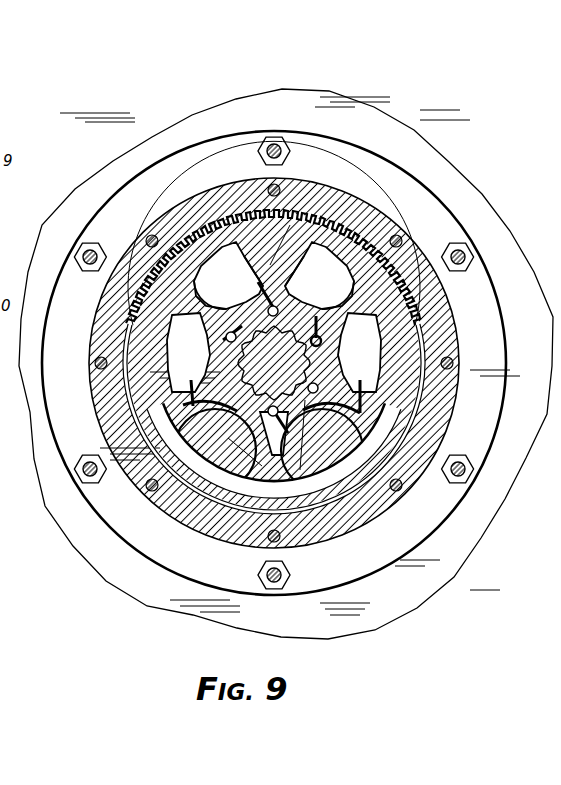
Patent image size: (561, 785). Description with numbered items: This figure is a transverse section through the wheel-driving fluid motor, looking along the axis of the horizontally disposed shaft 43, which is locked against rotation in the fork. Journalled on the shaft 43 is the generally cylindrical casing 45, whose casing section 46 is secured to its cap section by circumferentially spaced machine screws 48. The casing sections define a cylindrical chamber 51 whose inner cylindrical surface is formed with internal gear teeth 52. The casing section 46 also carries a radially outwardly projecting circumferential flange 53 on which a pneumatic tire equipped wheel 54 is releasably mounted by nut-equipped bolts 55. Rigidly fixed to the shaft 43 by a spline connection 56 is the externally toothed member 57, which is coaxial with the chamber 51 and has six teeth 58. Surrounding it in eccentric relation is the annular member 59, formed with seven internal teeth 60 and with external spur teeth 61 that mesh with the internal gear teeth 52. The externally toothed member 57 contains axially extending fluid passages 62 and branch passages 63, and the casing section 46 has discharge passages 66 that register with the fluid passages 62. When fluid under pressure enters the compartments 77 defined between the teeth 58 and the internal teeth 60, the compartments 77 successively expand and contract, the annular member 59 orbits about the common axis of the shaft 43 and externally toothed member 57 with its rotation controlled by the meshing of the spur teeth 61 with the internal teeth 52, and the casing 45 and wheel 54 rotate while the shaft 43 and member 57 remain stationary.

The shaft 43 is at (265, 369).
The casing 45 is at (175, 531).
The casing section 46 is at (212, 537).
The machine screws 48 is at (283, 184).
The cylindrical chamber 51 is at (283, 505).
The internal gear teeth 52 is at (131, 309).
The circumferential flange 53 is at (110, 510).
The wheel 54 is at (125, 569).
The nut-equipped bolts 55 is at (284, 140).
The spline connection 56 is at (292, 264).
The externally toothed member 57 is at (241, 313).
The teeth 58 is at (200, 318).
The annular member 59 is at (225, 470).
The internal teeth 60 is at (330, 192).
The external spur teeth 61 is at (140, 281).
The fluid passages 62 is at (228, 384).
The branch passages 63 is at (352, 383).
The discharge passages 66 is at (163, 420).
The compartments 77 is at (232, 275).